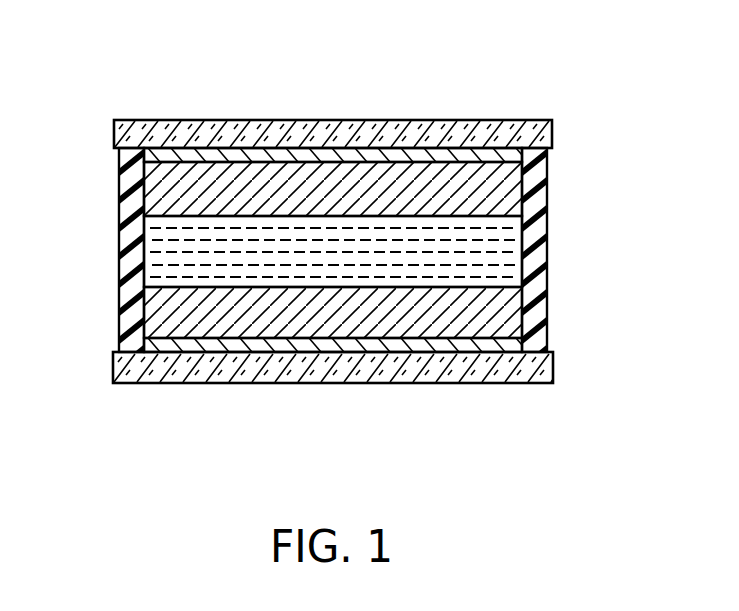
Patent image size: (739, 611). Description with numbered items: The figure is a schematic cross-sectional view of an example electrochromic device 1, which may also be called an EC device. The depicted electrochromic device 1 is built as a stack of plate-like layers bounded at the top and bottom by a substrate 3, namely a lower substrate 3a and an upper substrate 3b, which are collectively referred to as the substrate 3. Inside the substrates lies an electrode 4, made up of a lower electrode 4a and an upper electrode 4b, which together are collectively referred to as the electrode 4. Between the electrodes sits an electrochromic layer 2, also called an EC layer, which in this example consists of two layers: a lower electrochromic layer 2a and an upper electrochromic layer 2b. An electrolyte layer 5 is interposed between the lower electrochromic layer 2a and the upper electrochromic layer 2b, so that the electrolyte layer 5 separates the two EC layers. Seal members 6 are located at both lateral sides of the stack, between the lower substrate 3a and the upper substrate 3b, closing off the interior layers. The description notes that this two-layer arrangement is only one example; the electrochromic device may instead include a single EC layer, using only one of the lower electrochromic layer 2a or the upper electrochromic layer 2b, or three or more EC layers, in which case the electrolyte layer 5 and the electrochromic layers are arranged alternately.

The electrochromic device 1 is at (116, 54).
The electrochromic layer 2 is at (395, 444).
The lower electrochromic layer 2a is at (373, 327).
The upper electrochromic layer 2b is at (310, 203).
The substrate 3 is at (46, 122).
The lower substrate 3a is at (192, 362).
The upper substrate 3b is at (118, 132).
The electrode 4 is at (617, 142).
The lower electrode 4a is at (487, 347).
The upper electrode 4b is at (525, 154).
The electrolyte layer 5 is at (445, 270).
The seal members 6 is at (132, 350).